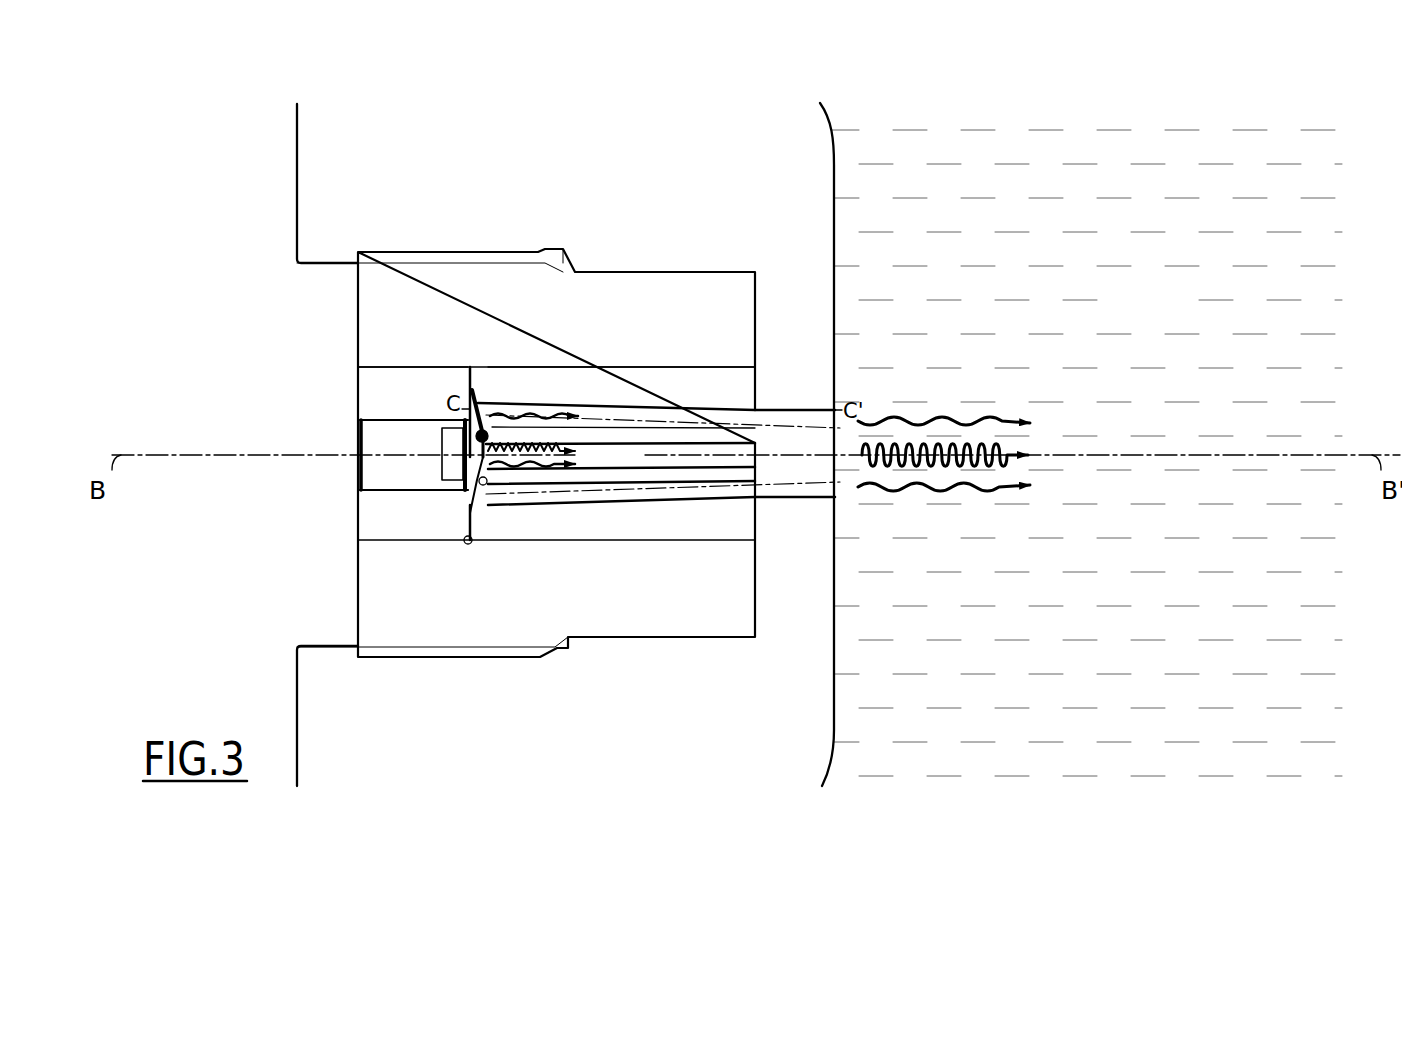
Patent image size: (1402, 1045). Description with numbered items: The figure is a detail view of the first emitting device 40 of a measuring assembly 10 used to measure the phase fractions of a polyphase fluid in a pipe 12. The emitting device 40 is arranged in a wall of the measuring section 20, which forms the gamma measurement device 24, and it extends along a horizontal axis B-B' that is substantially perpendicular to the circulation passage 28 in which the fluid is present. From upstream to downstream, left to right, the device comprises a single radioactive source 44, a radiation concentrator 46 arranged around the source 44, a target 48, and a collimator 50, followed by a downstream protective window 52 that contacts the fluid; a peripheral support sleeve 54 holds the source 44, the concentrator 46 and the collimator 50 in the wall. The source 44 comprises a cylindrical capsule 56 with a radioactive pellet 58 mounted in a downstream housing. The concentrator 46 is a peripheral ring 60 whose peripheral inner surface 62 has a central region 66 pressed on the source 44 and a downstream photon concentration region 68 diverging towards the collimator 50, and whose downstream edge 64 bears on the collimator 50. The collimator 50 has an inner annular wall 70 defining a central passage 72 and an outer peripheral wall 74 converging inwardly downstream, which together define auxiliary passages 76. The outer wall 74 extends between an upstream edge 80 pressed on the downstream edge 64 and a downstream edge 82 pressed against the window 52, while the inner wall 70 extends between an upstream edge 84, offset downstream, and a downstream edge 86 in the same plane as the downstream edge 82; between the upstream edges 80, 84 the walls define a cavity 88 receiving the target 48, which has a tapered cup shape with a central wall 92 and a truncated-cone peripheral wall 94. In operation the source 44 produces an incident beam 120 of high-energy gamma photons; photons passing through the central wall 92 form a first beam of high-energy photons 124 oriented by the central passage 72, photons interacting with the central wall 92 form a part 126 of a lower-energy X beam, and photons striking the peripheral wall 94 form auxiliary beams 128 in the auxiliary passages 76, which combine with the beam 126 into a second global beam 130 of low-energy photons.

The measuring assembly 10 is at (181, 188).
The pipe 12 is at (286, 103).
The measuring section 20 is at (297, 144).
The gamma measurement device 24 is at (253, 309).
The circulation passage 28 is at (1083, 453).
The first emitting device 40 is at (603, 208).
The radioactive source 44 is at (348, 513).
The radiation concentrator 46 is at (350, 380).
The target 48 is at (583, 272).
The collimator 50 is at (641, 363).
The downstream protective window 52 is at (816, 417).
The peripheral support sleeve 54 is at (627, 283).
The cylindrical capsule 56 is at (368, 440).
The radioactive pellet 58 is at (455, 464).
The peripheral ring 60 is at (392, 387).
The peripheral inner surface 62 is at (378, 420).
The downstream edge 64 is at (473, 400).
The central region 66 is at (441, 413).
The downstream photon concentration region 68 is at (465, 495).
The inner annular wall 70 is at (737, 450).
The central passage 72 is at (748, 455).
The outer peripheral wall 74 is at (702, 412).
The auxiliary passages 76 is at (719, 440).
The upstream edge 80 is at (467, 543).
The downstream edge 82 is at (757, 500).
The upstream edge 84 is at (500, 490).
The downstream edge 86 is at (757, 497).
The cavity 88 is at (490, 488).
The central wall 92 is at (545, 467).
The peripheral wall 94 is at (495, 470).
The incident beam 120 is at (365, 483).
The first beam of high-energy photons 124 is at (578, 455).
The part of second beam of lower-energy X photons 126 is at (572, 485).
The auxiliary beam 128 is at (490, 403).
The second global beam 130 is at (1022, 423).